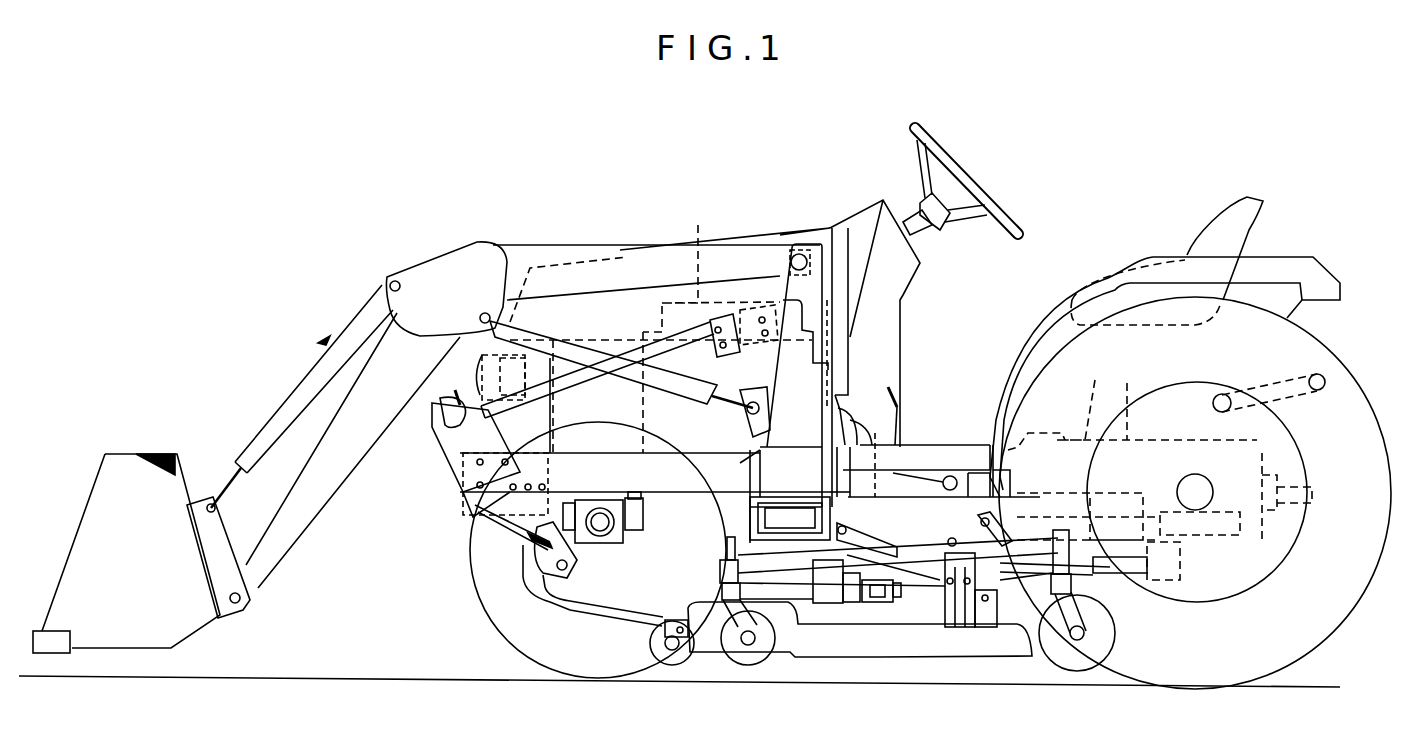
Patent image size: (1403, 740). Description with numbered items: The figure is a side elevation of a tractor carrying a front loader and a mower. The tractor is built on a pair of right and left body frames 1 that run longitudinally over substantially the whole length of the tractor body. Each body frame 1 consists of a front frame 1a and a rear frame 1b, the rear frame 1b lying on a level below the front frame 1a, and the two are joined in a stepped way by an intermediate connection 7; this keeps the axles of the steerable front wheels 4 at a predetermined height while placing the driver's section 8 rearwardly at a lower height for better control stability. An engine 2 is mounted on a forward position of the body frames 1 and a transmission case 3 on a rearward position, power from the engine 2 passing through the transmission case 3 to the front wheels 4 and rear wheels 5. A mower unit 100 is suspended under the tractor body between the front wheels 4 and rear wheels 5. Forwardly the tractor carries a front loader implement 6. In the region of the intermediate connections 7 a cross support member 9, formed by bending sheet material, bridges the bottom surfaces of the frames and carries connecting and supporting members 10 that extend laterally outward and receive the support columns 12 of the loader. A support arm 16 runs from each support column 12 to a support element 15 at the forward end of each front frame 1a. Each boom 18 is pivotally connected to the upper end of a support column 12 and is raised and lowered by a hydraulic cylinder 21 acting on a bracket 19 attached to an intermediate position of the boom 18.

The body frames 1 is at (667, 496).
The front frame 1a is at (623, 455).
The rear frame 1b is at (910, 507).
The engine 2 is at (695, 300).
The transmission case 3 is at (1162, 474).
The front wheels 4 is at (485, 604).
The rear wheels 5 is at (1342, 387).
The front loader implement 6 is at (150, 416).
The intermediate connection 7 is at (742, 512).
The driver's section 8 is at (1127, 197).
The cross support member 9 is at (740, 540).
The connecting and supporting member 10 is at (752, 458).
The support column 12 is at (813, 303).
The support element 15 is at (448, 457).
The support arm 16 is at (497, 385).
The boom 18 is at (535, 245).
The bracket 19 is at (477, 258).
The hydraulic cylinder 21 is at (583, 347).
The mower unit 100 is at (851, 645).